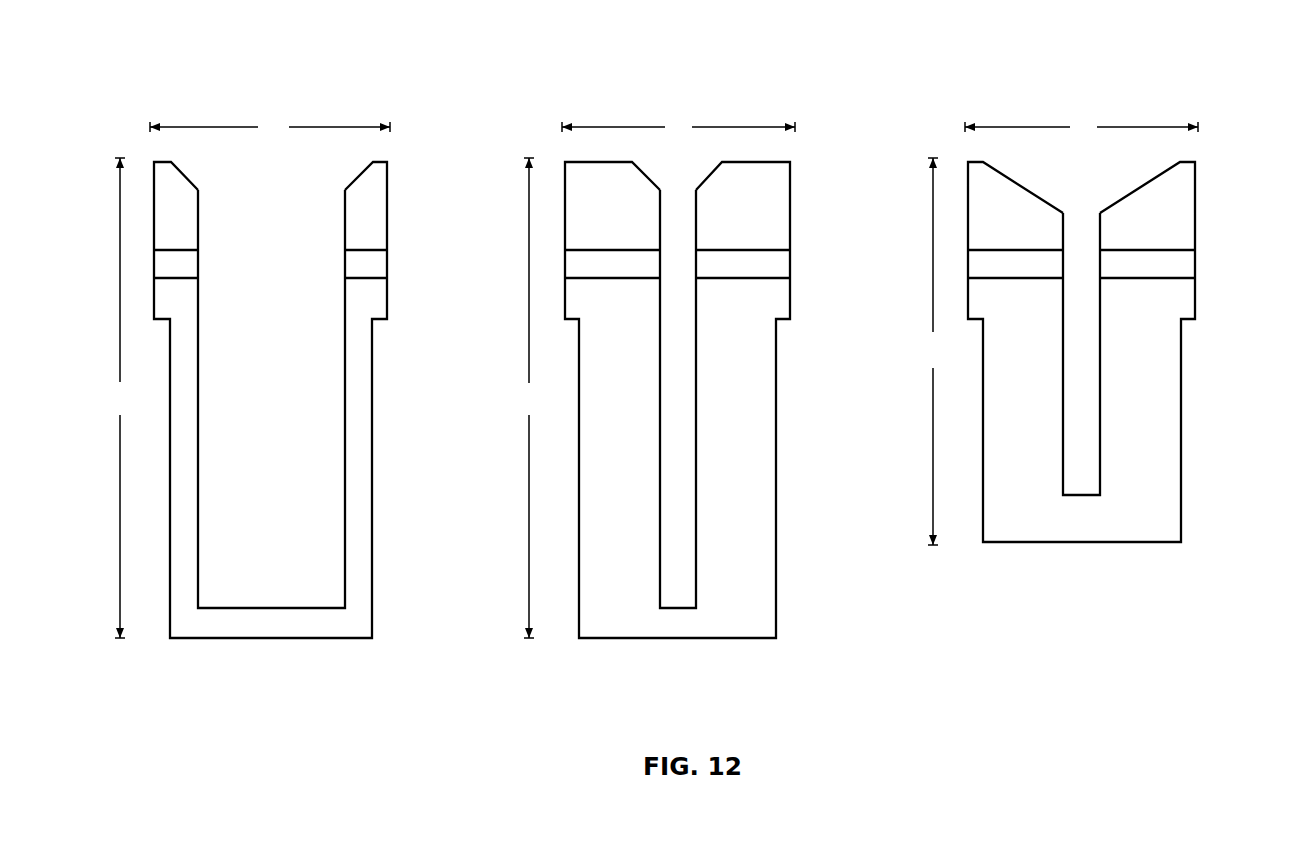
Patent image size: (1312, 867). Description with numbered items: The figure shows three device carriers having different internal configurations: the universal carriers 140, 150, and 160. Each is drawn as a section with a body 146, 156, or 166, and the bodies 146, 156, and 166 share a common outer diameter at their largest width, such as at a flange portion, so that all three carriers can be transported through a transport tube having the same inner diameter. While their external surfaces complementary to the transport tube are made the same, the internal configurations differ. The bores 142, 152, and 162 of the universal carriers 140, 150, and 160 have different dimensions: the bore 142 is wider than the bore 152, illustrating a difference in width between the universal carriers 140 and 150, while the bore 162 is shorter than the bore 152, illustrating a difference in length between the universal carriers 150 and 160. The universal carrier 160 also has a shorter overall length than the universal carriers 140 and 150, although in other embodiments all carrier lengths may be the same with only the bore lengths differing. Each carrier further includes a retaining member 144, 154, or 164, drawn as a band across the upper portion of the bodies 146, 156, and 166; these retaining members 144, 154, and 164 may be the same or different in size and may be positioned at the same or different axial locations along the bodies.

The universal carrier 140 is at (192, 77).
The bore 142 is at (250, 410).
The retaining member 144 is at (370, 264).
The body 146 is at (372, 518).
The universal carrier 150 is at (602, 77).
The bore 152 is at (695, 410).
The retaining member 154 is at (775, 265).
The body 156 is at (776, 463).
The universal carrier 160 is at (1042, 77).
The bore 162 is at (1098, 410).
The retaining member 164 is at (1180, 265).
The body 166 is at (1181, 430).